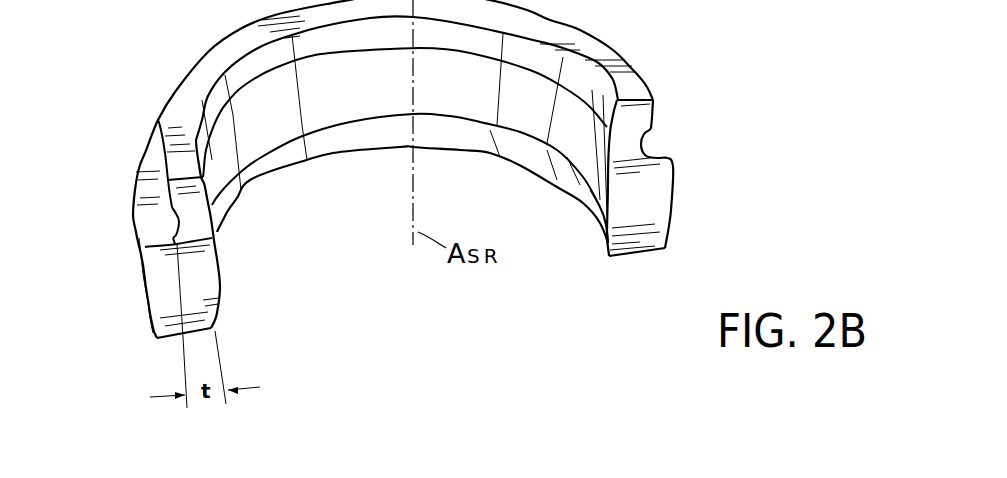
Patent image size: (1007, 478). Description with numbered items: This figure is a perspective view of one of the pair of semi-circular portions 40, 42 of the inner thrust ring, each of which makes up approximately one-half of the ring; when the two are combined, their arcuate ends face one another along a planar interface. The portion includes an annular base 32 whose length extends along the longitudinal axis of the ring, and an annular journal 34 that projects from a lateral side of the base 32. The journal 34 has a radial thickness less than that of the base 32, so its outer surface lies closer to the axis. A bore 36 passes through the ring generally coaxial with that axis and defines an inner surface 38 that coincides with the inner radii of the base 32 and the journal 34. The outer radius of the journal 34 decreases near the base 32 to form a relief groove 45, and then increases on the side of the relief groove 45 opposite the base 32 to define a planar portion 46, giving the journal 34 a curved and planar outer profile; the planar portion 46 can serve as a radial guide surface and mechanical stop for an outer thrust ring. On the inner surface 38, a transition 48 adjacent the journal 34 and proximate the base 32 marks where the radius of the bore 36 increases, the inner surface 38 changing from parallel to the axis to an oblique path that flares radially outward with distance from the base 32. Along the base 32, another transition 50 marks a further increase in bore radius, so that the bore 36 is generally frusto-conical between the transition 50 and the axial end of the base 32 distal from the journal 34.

The annular base 32 is at (126, 326).
The annular journal 34 is at (648, 51).
The bore 36 is at (566, 260).
The inner surface 38 is at (227, 188).
The semi-circular portion 40 is at (360, 169).
The semi-circular portion 42 is at (150, 60).
The relief groove 45 is at (660, 142).
The planar portion 46 is at (158, 206).
The transition 48 is at (225, 108).
The transition 50 is at (452, 115).